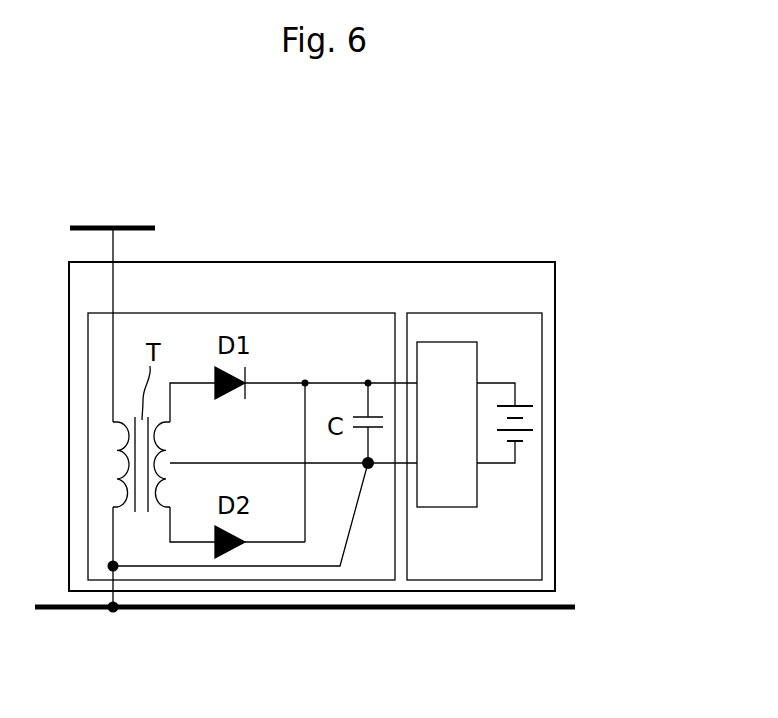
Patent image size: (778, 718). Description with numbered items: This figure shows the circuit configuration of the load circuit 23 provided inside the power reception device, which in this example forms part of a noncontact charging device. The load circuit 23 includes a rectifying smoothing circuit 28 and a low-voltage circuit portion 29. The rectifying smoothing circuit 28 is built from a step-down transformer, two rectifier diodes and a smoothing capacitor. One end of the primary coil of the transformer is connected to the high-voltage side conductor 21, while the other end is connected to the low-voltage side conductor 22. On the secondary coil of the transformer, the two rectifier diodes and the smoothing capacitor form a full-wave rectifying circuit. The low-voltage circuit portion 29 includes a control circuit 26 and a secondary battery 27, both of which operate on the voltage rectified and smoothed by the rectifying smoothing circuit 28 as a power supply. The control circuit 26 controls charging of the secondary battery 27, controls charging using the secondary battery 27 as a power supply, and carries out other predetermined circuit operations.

The high-voltage side conductor 21 is at (128, 228).
The low-voltage side conductor 22 is at (174, 611).
The load circuit 23 is at (411, 262).
The control circuit 26 is at (441, 342).
The secondary battery 27 is at (533, 420).
The rectifying smoothing circuit 28 is at (311, 313).
The low-voltage circuit portion 29 is at (543, 313).